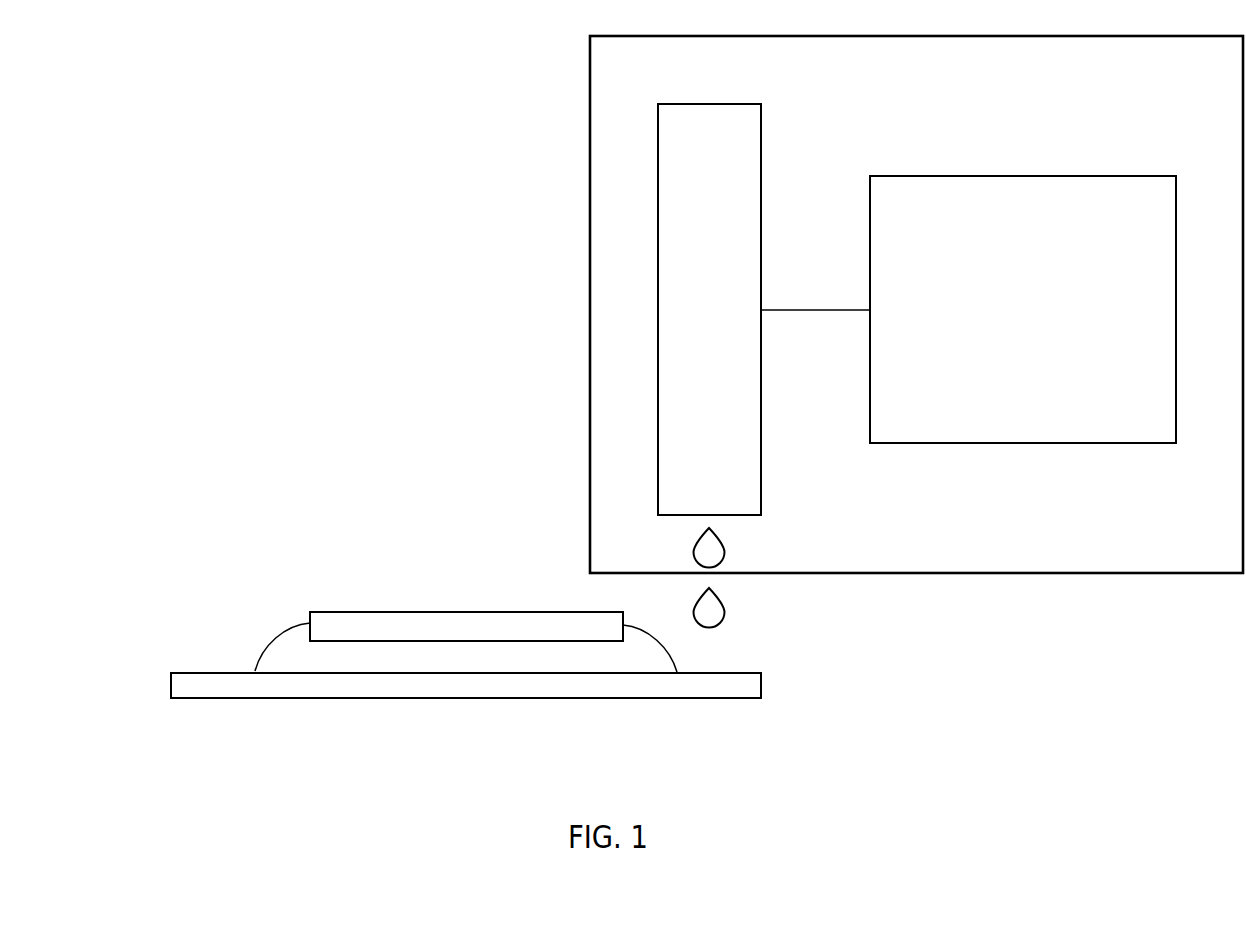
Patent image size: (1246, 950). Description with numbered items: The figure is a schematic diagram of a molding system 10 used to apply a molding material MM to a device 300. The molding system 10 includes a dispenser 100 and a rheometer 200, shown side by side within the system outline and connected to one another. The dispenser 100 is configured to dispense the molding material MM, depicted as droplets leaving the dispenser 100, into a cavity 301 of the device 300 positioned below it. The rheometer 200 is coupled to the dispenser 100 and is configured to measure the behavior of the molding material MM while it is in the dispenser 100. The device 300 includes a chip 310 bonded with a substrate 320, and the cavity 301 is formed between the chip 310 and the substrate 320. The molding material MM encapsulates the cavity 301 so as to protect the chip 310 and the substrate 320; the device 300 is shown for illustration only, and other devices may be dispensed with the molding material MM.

The molding system 10 is at (590, 118).
The dispenser 100 is at (736, 330).
The rheometer 200 is at (1049, 330).
The device 300 is at (387, 386).
The cavity 301 is at (373, 660).
The chip 310 is at (444, 598).
The substrate 320 is at (191, 659).
The molding material MM is at (732, 610).